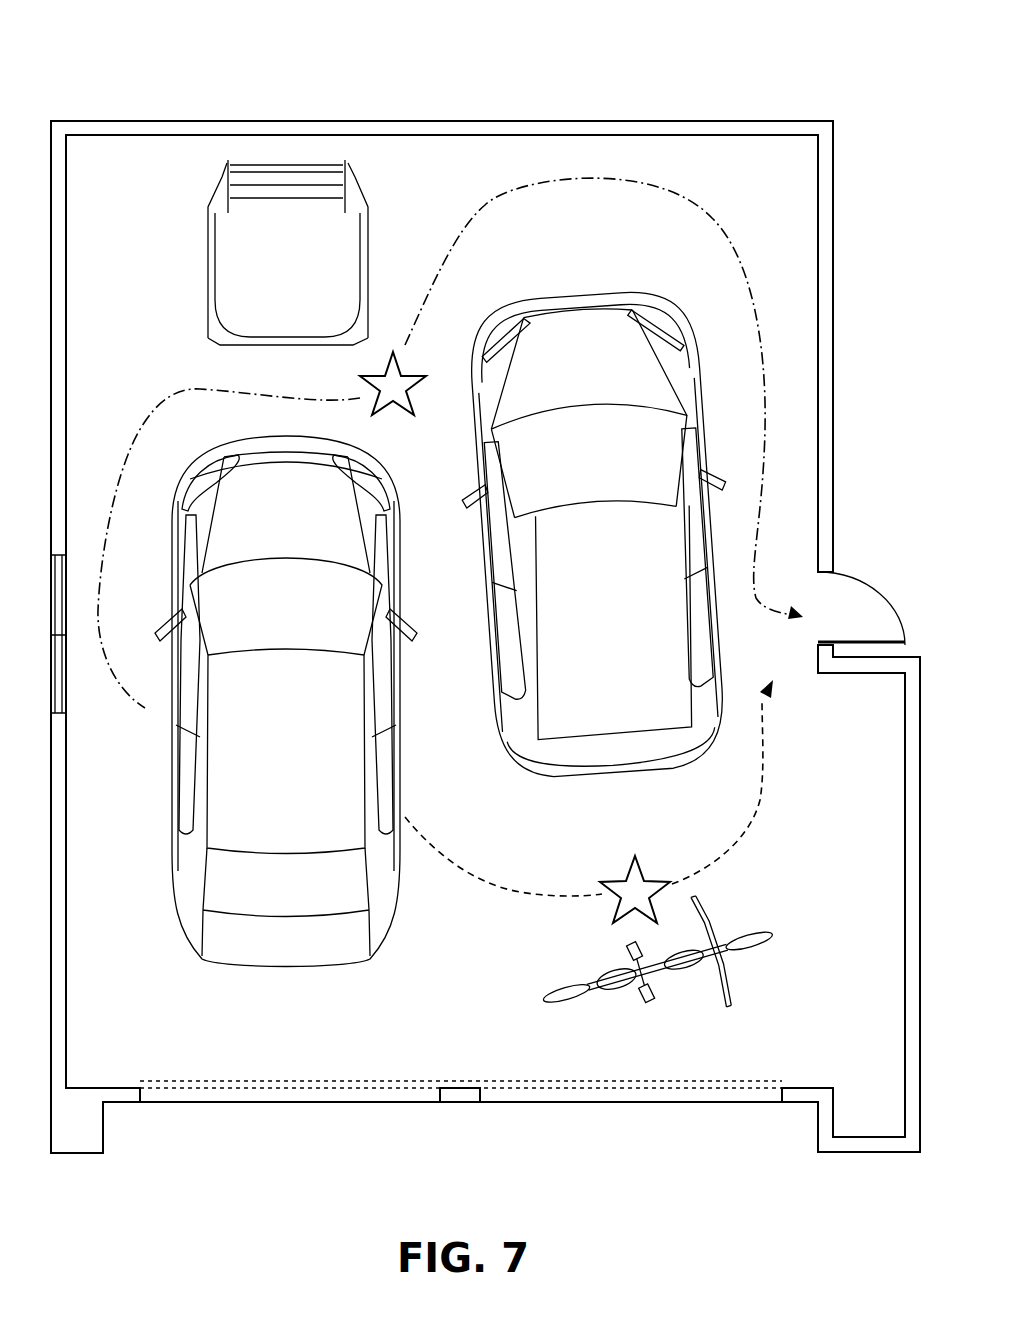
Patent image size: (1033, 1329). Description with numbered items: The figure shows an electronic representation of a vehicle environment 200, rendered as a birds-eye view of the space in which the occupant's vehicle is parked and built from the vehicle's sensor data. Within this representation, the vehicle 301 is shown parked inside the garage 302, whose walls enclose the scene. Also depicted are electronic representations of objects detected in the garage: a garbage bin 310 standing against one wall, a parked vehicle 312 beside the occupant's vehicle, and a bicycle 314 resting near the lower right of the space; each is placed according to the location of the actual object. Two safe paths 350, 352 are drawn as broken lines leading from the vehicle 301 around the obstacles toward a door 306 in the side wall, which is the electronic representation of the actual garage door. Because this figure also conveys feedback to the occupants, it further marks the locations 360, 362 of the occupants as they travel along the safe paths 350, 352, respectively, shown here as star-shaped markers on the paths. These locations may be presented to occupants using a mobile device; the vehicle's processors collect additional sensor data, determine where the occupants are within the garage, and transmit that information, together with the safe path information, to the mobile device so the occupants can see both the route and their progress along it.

The vehicle environment / garage 200 is at (737, 89).
The vehicle 301 is at (183, 858).
The garage 302 is at (393, 181).
The door 306 is at (840, 612).
The garbage bin 310 is at (270, 218).
The parked vehicle 312 is at (623, 720).
The bicycle 314 is at (770, 938).
The safe path 350 is at (600, 176).
The safe path 352 is at (765, 806).
The location 360 is at (405, 415).
The location 362 is at (612, 905).